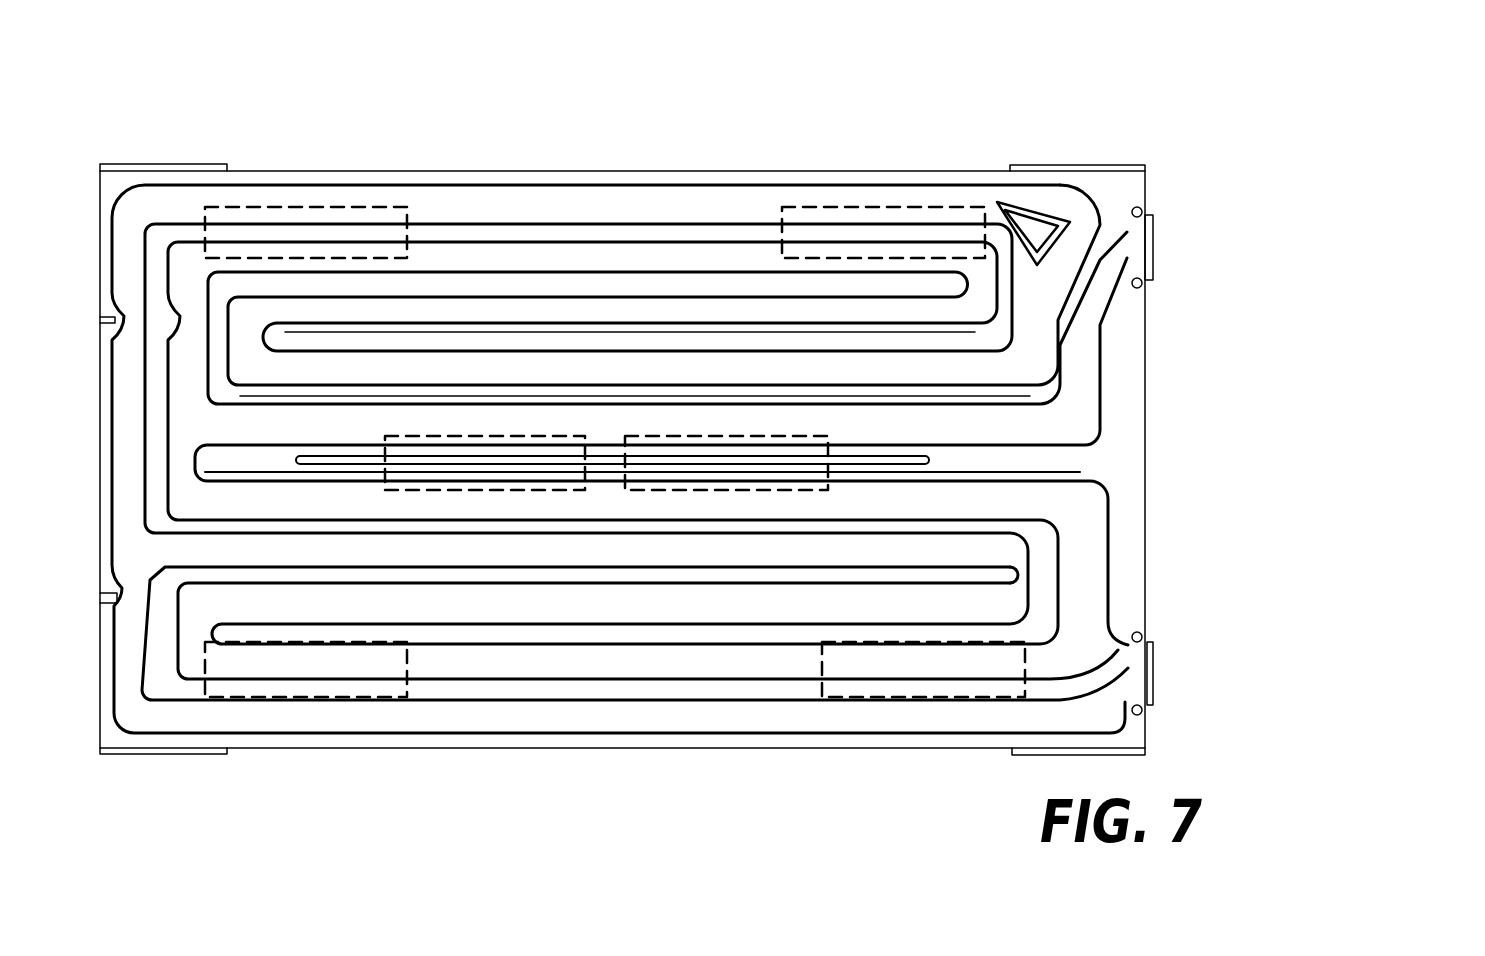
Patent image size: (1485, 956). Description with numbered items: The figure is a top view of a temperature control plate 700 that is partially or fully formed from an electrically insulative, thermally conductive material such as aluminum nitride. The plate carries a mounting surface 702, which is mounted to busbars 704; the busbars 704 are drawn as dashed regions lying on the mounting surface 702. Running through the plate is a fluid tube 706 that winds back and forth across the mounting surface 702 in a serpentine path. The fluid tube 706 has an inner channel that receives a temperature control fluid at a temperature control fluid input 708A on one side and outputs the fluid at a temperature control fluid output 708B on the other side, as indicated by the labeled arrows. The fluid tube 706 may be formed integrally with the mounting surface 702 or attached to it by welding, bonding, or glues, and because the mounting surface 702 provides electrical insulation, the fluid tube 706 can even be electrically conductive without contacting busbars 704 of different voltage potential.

The temperature control plate 700 is at (1245, 93).
The mounting surface 702 is at (368, 170).
The busbars 704 is at (327, 258).
The fluid tube 706 is at (577, 205).
The temperature control fluid input 708A is at (1150, 245).
The temperature control fluid output 708B is at (1130, 683).